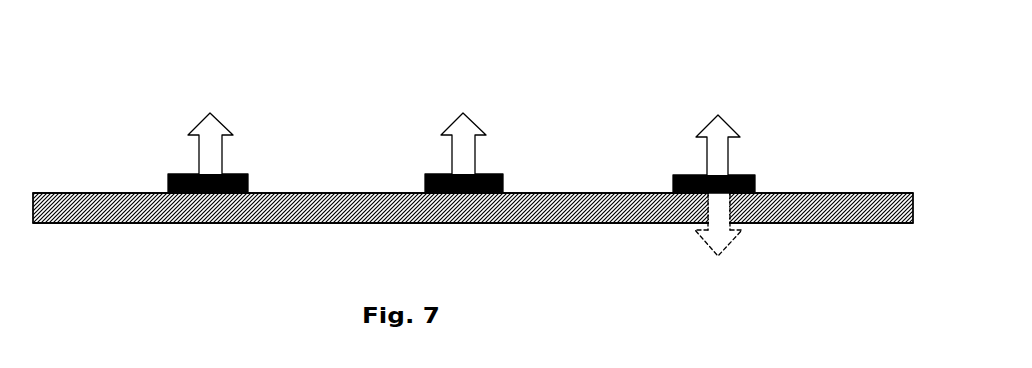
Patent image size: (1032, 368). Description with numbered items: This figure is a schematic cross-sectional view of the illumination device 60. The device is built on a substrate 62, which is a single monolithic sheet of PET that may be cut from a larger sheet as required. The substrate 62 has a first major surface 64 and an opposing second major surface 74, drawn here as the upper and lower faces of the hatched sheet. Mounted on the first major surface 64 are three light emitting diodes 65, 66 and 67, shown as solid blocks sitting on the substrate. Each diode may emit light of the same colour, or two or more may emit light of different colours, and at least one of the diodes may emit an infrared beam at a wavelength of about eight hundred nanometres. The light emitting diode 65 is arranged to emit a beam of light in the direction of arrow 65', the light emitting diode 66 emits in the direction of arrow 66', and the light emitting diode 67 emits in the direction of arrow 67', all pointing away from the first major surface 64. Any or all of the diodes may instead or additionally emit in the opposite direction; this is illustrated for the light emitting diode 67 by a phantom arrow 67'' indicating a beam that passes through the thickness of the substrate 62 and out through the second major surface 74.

The illumination device 60 is at (643, 102).
The substrate 62 is at (70, 203).
The first major surface 64 is at (833, 186).
The second major surface 74 is at (121, 233).
The light emitting diode 65 is at (245, 149).
The light emitting diode 66 is at (509, 164).
The light emitting diode 67 is at (748, 154).
The arrow 65' is at (225, 117).
The arrow 66' is at (500, 125).
The arrow 67' is at (737, 124).
The arrow 67'' is at (686, 238).